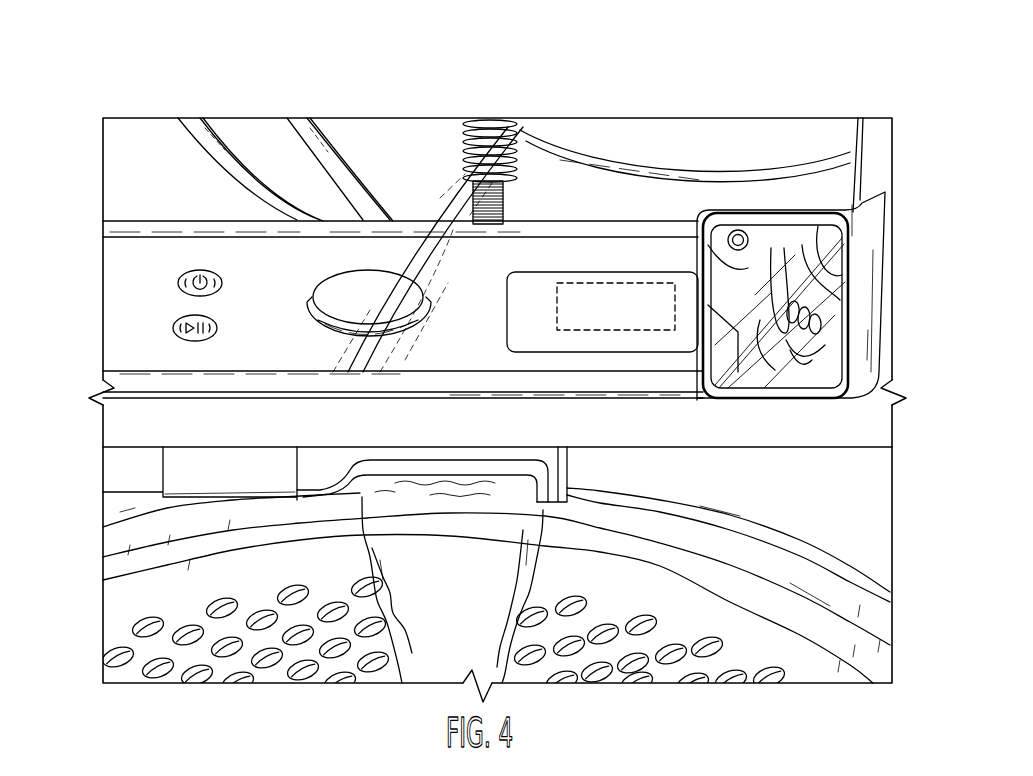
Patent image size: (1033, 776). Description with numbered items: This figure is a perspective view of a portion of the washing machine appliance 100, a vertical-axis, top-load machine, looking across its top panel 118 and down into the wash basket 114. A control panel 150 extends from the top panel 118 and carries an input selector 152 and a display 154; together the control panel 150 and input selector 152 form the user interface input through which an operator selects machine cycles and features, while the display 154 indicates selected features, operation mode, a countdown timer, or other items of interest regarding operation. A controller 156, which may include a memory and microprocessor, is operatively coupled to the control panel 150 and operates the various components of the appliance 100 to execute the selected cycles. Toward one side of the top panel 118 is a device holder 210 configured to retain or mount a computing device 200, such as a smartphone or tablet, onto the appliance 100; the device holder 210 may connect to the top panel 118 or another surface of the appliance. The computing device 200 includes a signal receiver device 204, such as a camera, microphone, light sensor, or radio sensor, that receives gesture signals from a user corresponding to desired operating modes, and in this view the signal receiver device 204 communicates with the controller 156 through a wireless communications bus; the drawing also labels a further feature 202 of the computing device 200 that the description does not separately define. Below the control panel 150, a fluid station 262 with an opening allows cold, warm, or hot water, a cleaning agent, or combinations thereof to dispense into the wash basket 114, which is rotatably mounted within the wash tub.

The washing machine appliance 100 is at (183, 96).
The wash basket 114 is at (785, 562).
The top panel 118 is at (468, 216).
The control panel 150 is at (410, 248).
The input selector 152 is at (338, 293).
The display 154 is at (567, 268).
The controller 156 is at (645, 283).
The computing device 200 is at (844, 199).
The display screen 202 is at (827, 324).
The signal receiver device 204 is at (746, 232).
The device holder 210 is at (700, 212).
The fluid station 262 is at (363, 492).